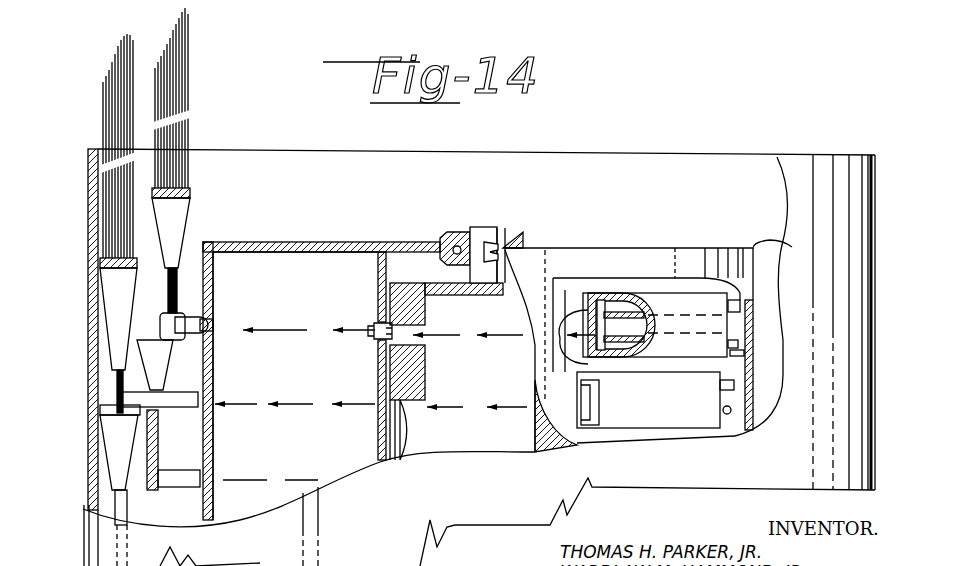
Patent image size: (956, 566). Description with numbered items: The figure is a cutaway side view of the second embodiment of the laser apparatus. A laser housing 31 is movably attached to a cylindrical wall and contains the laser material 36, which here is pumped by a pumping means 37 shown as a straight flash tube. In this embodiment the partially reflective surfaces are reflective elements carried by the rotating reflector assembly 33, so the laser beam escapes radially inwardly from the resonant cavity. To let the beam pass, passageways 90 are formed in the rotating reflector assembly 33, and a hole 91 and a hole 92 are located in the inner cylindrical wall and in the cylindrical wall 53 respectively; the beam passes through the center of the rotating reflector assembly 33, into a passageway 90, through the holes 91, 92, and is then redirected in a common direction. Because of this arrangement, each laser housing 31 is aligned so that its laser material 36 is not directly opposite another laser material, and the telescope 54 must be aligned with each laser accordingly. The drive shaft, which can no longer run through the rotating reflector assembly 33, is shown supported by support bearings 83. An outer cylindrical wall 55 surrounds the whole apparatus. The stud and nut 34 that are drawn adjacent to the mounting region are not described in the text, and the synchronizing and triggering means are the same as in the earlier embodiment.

The laser housing 31 is at (695, 303).
The rotating reflector assembly 33 is at (413, 283).
The stud and nut 34 is at (467, 228).
The laser material 36 is at (665, 325).
The pumping means 37 is at (630, 298).
The cylindrical wall 53 is at (770, 242).
The telescope 54 is at (157, 202).
The outer cylindrical wall 55 is at (875, 292).
The support bearing 83 is at (502, 235).
The passageway 90 is at (380, 322).
The hole 91 is at (358, 330).
The hole 92 is at (175, 312).